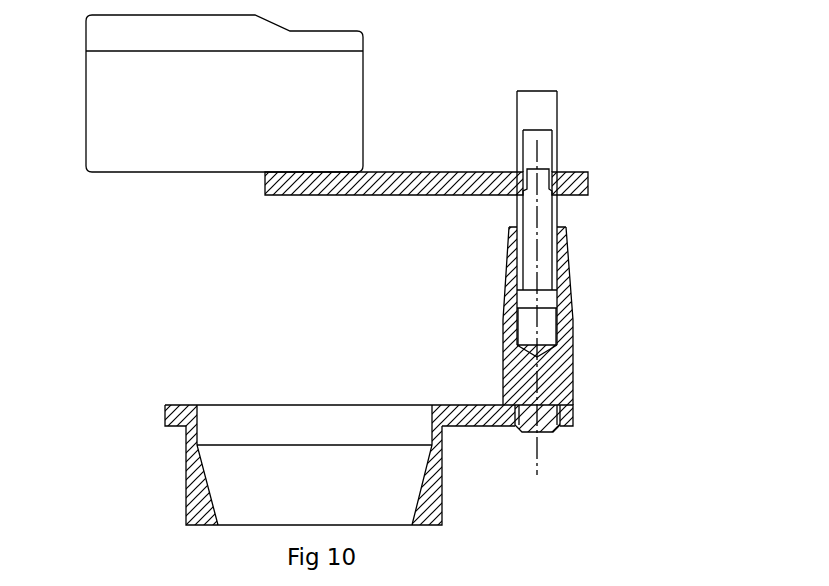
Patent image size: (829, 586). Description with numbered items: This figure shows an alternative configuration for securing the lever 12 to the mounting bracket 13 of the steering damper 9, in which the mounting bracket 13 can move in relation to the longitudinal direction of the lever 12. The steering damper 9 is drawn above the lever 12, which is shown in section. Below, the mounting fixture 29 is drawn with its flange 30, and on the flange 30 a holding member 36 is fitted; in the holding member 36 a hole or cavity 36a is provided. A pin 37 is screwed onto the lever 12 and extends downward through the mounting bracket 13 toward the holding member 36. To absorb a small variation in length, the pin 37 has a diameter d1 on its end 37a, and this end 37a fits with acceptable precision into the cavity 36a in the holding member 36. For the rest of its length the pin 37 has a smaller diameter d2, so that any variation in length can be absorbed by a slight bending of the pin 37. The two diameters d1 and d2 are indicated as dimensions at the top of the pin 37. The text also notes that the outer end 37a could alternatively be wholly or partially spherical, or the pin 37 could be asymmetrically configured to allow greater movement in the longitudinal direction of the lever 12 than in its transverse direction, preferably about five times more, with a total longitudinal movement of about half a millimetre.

The steering damper 9 is at (344, 75).
The lever 12 is at (585, 172).
The mounting bracket 13 is at (475, 296).
The mounting fixture 29 is at (182, 397).
The flange 30 is at (477, 418).
The holding member 36 is at (532, 372).
The hole 36a is at (545, 328).
The pin 37 is at (538, 242).
The end of the pin 37a is at (540, 300).
The diameter of the pin end d1 is at (537, 145).
The smaller diameter of the pin d2 is at (537, 138).